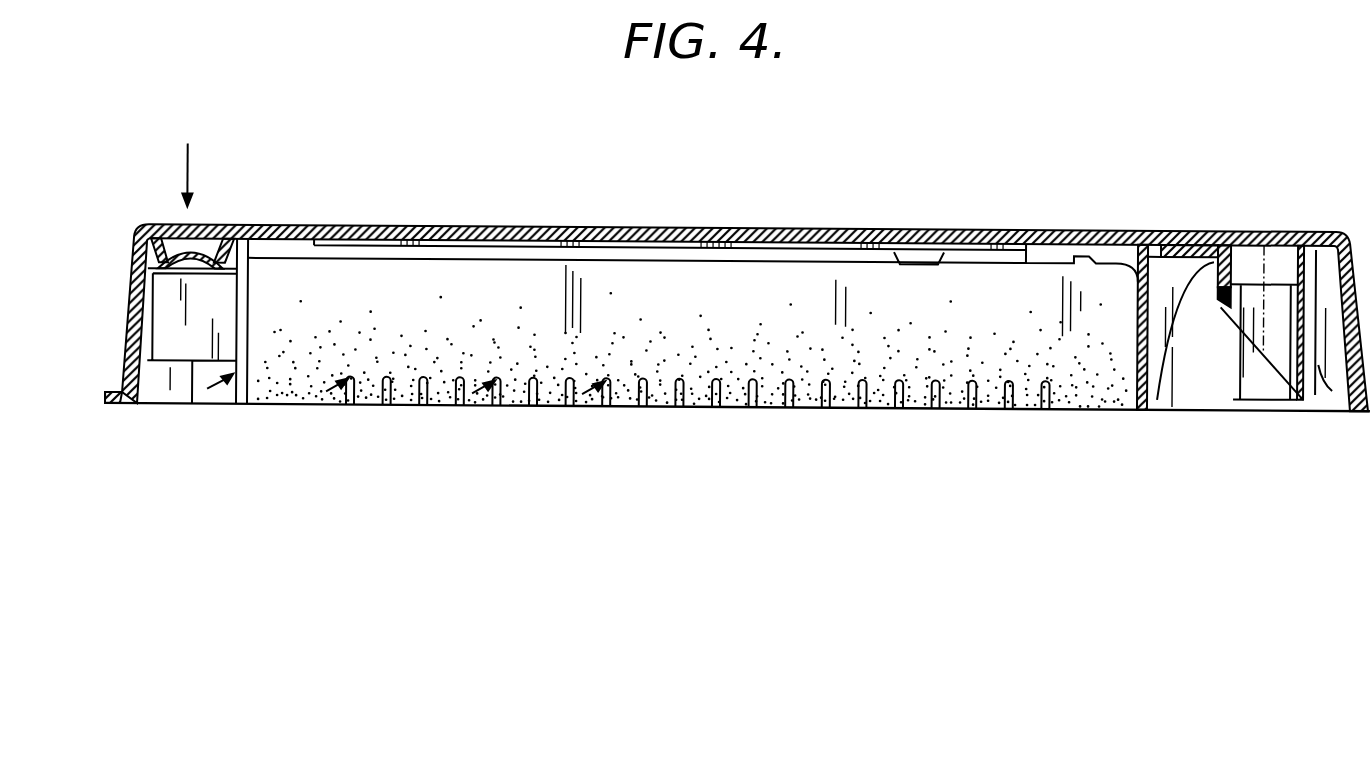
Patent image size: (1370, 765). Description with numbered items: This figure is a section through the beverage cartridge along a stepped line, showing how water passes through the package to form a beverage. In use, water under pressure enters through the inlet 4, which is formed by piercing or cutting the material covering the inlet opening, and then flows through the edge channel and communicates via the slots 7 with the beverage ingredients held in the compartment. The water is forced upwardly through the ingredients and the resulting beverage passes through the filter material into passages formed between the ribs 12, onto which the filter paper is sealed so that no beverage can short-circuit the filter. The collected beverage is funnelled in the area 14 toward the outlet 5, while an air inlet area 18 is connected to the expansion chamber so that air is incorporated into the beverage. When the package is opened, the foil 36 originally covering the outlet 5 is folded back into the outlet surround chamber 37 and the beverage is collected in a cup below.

The inlet 4 is at (163, 300).
The outlet 5 is at (1277, 348).
The slots 7 is at (432, 407).
The ribs 12 is at (640, 250).
The funnelling area 14 is at (1051, 237).
The air inlet area 18 is at (1197, 238).
The foil 36 is at (1223, 350).
The outlet surround chamber 37 is at (1298, 278).